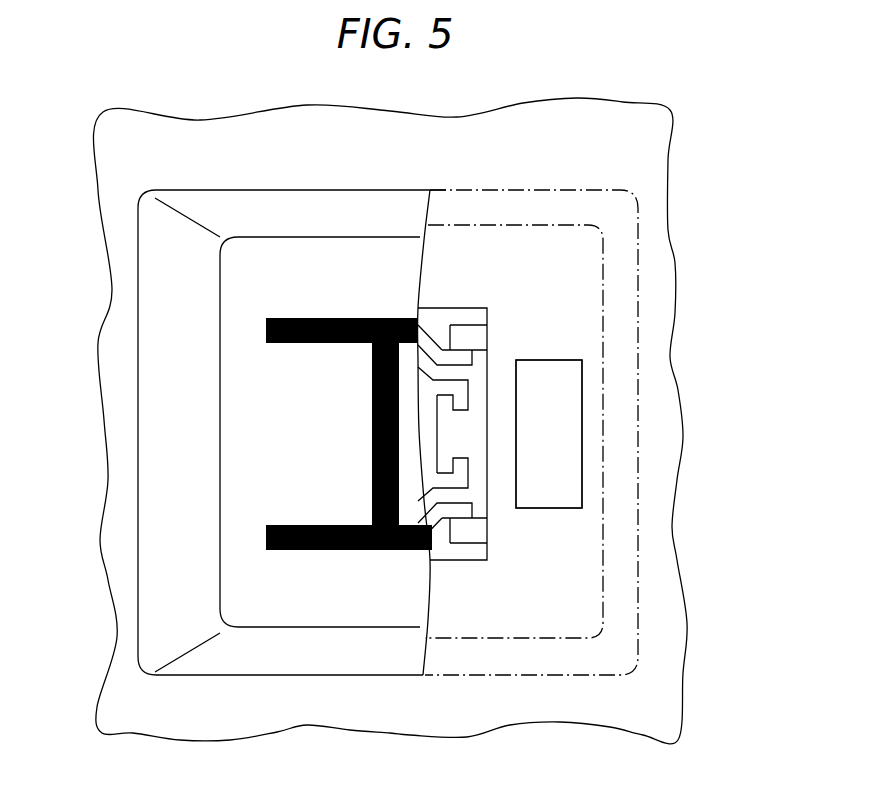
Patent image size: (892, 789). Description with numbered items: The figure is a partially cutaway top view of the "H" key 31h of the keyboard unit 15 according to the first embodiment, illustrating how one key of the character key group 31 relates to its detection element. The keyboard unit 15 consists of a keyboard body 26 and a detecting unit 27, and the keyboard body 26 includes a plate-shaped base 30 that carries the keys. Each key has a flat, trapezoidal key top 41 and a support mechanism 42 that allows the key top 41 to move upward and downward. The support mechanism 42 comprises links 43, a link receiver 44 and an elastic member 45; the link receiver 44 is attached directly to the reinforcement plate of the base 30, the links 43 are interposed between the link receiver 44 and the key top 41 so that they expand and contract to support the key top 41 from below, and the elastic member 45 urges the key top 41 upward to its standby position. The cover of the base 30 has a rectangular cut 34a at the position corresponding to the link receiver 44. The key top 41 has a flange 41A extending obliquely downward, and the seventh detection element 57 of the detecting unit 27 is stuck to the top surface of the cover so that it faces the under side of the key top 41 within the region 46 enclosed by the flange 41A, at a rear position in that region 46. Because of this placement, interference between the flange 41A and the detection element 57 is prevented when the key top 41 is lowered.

The keyboard unit 15 is at (590, 166).
The keyboard body 26 is at (462, 183).
The detecting unit 27 is at (553, 498).
The base 30 is at (112, 155).
The character key group 31 is at (662, 491).
The "H" key 31h is at (303, 212).
The rectangular cut 34a is at (458, 563).
The key top 41 is at (240, 294).
The flange 41A is at (618, 322).
The support mechanism 42 is at (475, 541).
The links 43 is at (478, 395).
The link receiver 44 is at (448, 330).
The elastic member 45 is at (428, 432).
The region 46 is at (578, 262).
The seventh detection element 57 is at (556, 375).